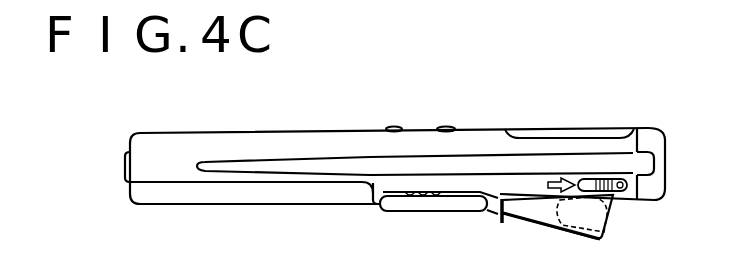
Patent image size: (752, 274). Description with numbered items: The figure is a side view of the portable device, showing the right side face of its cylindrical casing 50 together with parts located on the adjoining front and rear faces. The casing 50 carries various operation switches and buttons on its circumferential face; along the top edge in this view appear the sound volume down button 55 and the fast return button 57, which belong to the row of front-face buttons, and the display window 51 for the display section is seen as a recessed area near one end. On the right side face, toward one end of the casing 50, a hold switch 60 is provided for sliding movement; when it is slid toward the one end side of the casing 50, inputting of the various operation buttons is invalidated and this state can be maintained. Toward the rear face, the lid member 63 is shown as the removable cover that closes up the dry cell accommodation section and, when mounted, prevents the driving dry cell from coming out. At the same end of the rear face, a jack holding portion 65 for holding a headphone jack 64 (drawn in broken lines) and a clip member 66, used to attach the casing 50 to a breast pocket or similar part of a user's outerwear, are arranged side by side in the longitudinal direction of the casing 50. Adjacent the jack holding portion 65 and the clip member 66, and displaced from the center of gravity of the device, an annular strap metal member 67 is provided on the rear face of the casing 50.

The casing 50 is at (198, 137).
The display window 51 is at (573, 136).
The sound volume down button 55 is at (392, 127).
The fast return button 57 is at (446, 127).
The hold switch 60 is at (627, 186).
The lid member 63 is at (225, 197).
The headphone jack 64 is at (612, 223).
The jack holding portion 65 is at (538, 223).
The clip member 66 is at (398, 212).
The annular strap metal member 67 is at (500, 221).